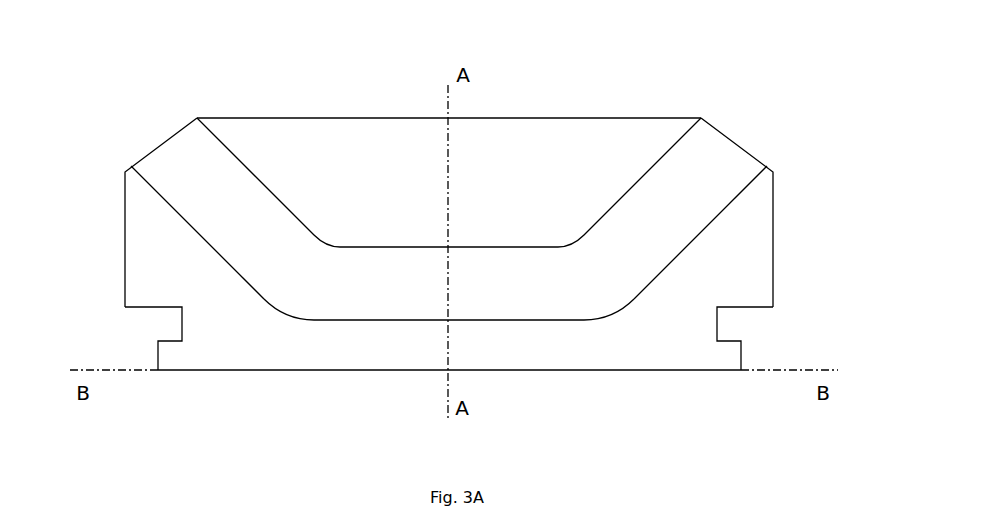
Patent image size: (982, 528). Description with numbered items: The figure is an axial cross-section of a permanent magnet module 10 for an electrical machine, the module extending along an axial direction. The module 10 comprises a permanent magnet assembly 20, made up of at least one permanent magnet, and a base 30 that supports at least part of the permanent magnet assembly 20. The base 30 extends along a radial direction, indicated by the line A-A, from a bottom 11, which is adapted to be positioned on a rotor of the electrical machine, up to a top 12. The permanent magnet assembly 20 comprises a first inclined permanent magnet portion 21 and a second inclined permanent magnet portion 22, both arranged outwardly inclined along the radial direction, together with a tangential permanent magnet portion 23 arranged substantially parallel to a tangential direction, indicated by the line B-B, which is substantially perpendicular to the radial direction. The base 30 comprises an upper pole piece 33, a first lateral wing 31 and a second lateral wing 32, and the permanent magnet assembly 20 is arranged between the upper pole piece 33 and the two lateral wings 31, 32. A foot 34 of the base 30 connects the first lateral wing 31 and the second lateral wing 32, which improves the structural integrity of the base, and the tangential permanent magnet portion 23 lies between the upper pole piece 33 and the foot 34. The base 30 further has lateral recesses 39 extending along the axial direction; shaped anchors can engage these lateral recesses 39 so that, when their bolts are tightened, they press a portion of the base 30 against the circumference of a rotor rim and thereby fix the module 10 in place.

The permanent magnet module 10 is at (627, 90).
The bottom 11 is at (673, 372).
The top 12 is at (582, 118).
The permanent magnet assembly 20 is at (175, 135).
The first inclined permanent magnet portion 21 is at (698, 185).
The second inclined permanent magnet portion 22 is at (185, 185).
The tangential permanent magnet portion 23 is at (492, 303).
The base 30 is at (777, 230).
The first lateral wing 31 is at (753, 278).
The second lateral wing 32 is at (188, 283).
The upper pole piece 33 is at (358, 173).
The foot 34 is at (312, 358).
The lateral recesses 39 is at (145, 325).